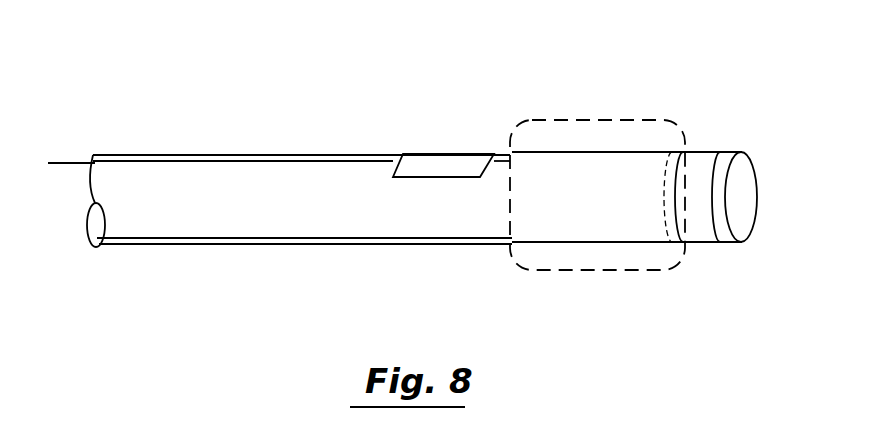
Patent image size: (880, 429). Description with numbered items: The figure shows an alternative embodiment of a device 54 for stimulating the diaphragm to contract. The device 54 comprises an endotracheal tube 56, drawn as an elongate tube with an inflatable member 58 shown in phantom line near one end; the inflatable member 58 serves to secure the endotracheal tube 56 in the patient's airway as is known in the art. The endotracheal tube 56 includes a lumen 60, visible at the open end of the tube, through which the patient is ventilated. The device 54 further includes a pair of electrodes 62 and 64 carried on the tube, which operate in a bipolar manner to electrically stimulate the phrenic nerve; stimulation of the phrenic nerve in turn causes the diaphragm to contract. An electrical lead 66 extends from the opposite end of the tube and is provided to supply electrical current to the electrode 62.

The device 54 is at (428, 153).
The endotracheal tube 56 is at (172, 155).
The inflatable member 58 is at (573, 118).
The lumen 60 is at (740, 178).
The electrode 62 is at (447, 167).
The electrode 64 is at (700, 162).
The electrical lead 66 is at (68, 161).